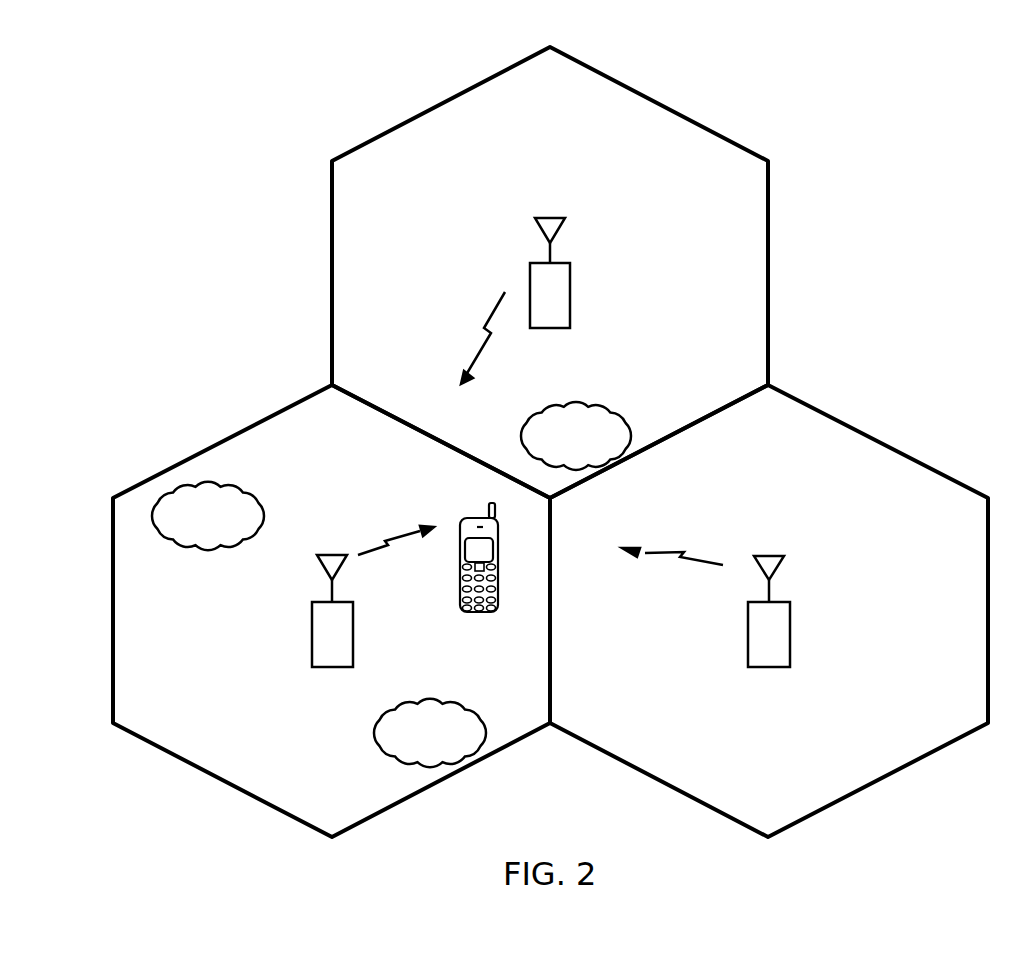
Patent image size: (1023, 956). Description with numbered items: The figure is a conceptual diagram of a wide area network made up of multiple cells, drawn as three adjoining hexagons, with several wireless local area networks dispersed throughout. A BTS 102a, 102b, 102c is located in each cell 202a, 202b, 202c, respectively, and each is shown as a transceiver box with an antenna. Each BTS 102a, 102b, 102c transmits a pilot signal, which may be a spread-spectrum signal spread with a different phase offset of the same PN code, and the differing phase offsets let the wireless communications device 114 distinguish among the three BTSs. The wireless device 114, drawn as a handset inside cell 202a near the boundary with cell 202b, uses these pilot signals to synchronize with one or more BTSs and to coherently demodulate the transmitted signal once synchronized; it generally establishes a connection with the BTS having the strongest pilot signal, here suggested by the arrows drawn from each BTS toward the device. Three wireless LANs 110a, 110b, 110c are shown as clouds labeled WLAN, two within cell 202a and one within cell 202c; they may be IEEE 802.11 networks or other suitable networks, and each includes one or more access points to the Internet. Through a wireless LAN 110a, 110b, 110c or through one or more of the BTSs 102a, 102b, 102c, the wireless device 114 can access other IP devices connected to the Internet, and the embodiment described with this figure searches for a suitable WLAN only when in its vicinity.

The cell 202a is at (208, 447).
The cell 202b is at (893, 447).
The cell 202c is at (642, 93).
The BTS 102a is at (312, 625).
The BTS 102b is at (790, 628).
The BTS 102c is at (570, 292).
The wireless LAN 110a is at (225, 486).
The wireless LAN 110b is at (392, 757).
The wireless LAN 110c is at (603, 407).
The wireless communications device 114 is at (470, 612).